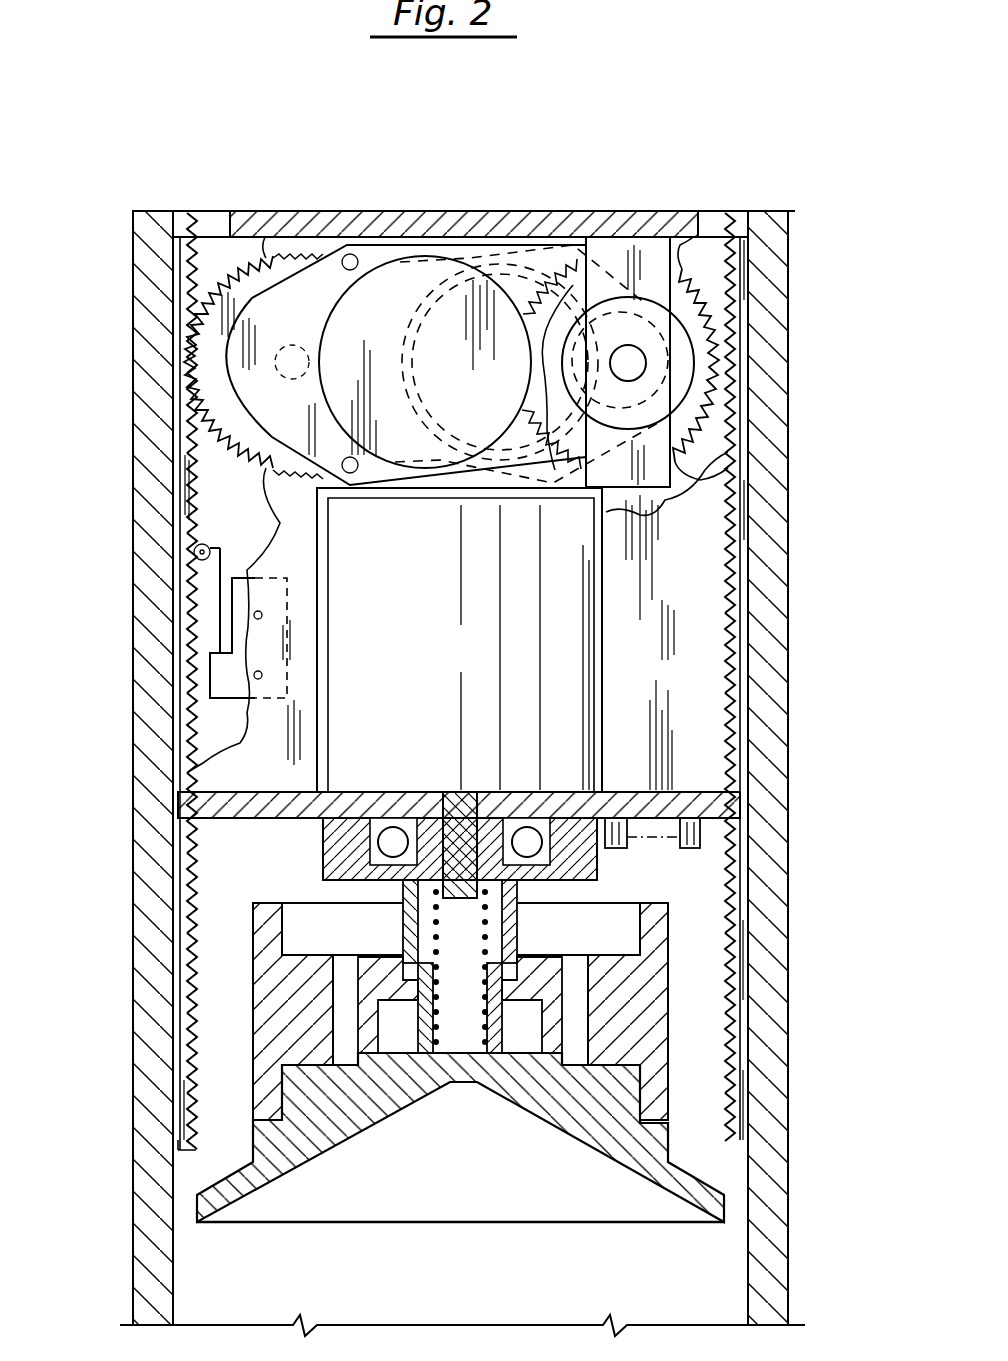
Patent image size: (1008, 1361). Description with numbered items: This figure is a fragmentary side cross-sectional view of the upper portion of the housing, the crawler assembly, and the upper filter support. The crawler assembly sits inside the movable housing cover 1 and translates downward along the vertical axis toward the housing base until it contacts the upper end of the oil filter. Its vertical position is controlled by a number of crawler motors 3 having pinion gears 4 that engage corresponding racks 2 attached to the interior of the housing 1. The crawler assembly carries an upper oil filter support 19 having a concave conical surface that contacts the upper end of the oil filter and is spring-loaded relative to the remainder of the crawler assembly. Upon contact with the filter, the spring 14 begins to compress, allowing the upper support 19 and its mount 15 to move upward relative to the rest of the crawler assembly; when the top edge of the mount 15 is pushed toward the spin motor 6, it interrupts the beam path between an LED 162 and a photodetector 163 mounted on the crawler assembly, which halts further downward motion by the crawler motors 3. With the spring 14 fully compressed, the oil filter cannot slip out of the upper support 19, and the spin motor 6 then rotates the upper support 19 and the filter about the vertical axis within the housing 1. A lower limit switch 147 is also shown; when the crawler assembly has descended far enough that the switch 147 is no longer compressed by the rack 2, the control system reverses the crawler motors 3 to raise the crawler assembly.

The housing cover 1 is at (150, 826).
The rack 2 is at (185, 268).
The crawler motor 3 is at (380, 262).
The pinion gear 4 is at (208, 350).
The spin motor 6 is at (474, 665).
The spring 14 is at (448, 938).
The mount 15 is at (312, 1018).
The upper oil filter support 19 is at (608, 1116).
The lower limit switch 147 is at (225, 680).
The LED 162 is at (616, 848).
The photodetector 163 is at (690, 848).